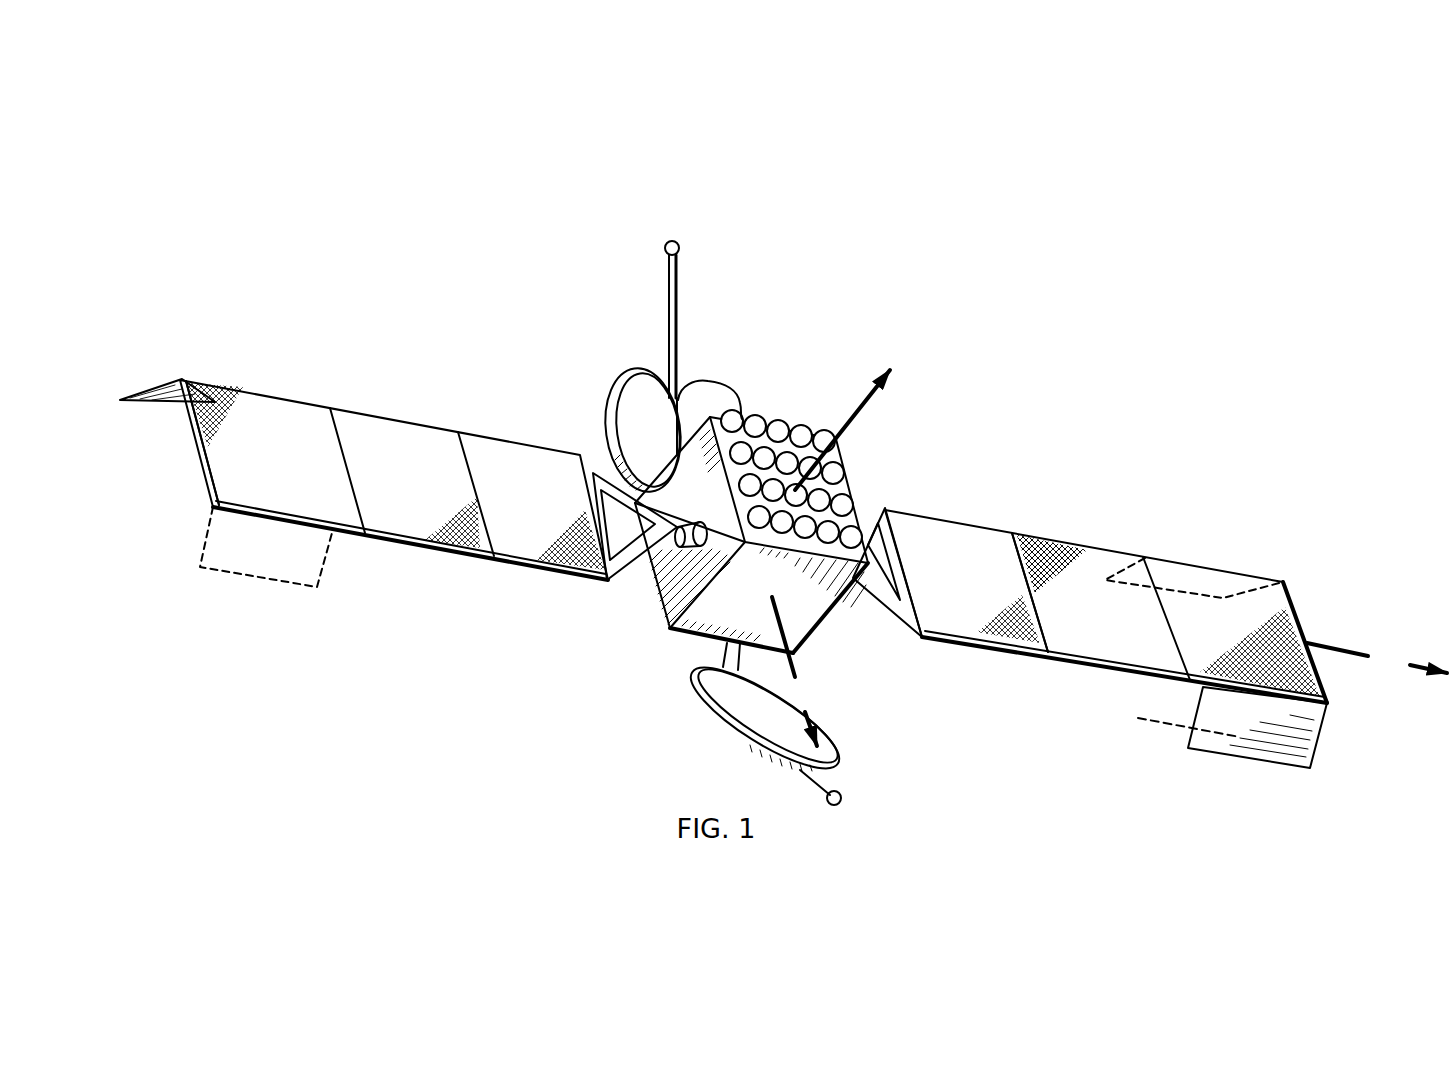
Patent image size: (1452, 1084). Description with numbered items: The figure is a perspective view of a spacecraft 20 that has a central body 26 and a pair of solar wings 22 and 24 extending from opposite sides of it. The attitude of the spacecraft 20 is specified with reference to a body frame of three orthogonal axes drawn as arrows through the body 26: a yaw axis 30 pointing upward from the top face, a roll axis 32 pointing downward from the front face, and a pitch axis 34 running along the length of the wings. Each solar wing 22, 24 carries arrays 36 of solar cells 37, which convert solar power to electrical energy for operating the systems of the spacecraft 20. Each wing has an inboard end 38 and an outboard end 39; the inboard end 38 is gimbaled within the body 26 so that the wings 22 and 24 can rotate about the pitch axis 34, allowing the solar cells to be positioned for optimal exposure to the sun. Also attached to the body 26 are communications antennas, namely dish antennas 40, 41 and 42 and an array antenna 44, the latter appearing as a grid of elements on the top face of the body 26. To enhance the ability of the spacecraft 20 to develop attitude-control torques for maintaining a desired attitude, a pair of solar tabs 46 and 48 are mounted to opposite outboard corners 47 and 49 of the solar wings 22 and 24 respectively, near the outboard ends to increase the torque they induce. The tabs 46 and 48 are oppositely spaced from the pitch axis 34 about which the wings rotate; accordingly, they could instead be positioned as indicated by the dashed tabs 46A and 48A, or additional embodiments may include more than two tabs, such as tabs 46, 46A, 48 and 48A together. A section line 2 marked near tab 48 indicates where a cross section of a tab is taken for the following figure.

The spacecraft 20 is at (537, 338).
The solar wing 22 is at (410, 432).
The solar wing 24 is at (1130, 556).
The body 26 is at (674, 602).
The yaw axis 30 is at (842, 430).
The roll axis 32 is at (794, 671).
The pitch axis 34 is at (1377, 659).
The array of solar cells 36 is at (1028, 534).
The solar cell 37 is at (1060, 550).
The inboard end 38 is at (698, 522).
The outboard end 39 is at (210, 489).
The dish antenna 40 is at (728, 395).
The dish antenna 41 is at (612, 378).
The dish antenna 42 is at (823, 730).
The array antenna 44 is at (848, 465).
The solar tab 46 is at (153, 386).
The solar tab 46A is at (317, 587).
The outboard corner 47 is at (190, 382).
The solar tab 48 is at (1295, 758).
The solar tab 48A is at (1297, 610).
The outboard corner 49 is at (1320, 690).
The section line 2- 2 is at (1140, 726).